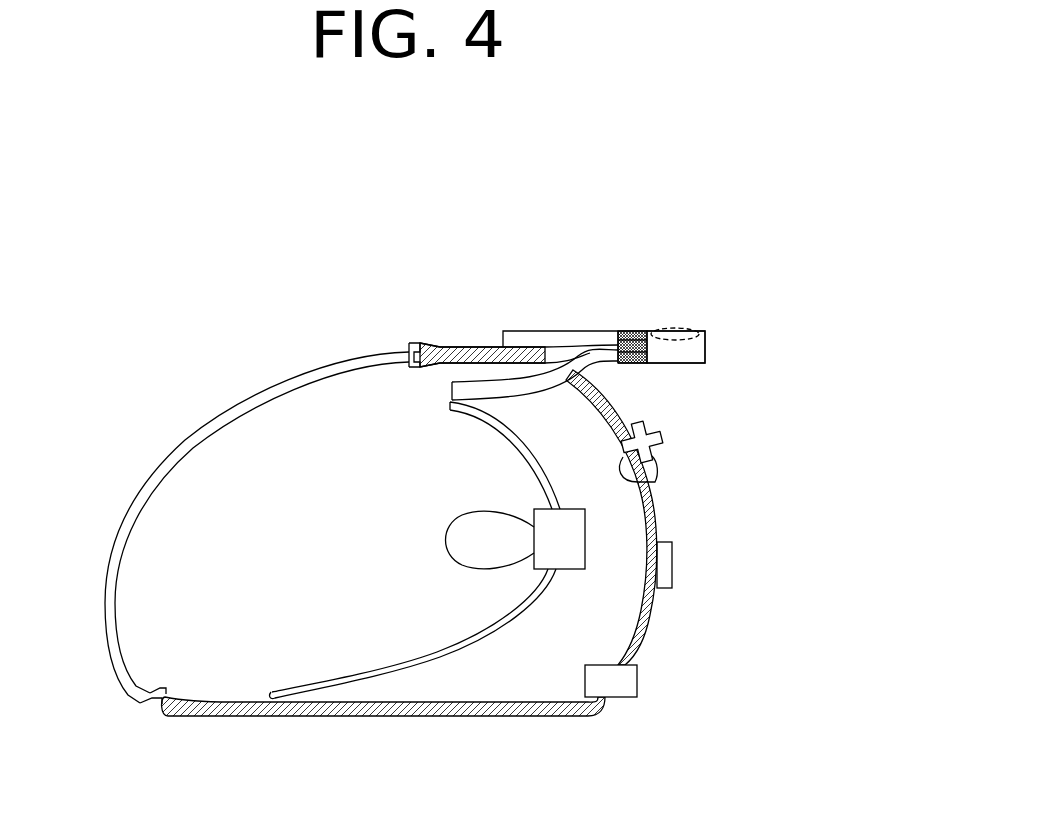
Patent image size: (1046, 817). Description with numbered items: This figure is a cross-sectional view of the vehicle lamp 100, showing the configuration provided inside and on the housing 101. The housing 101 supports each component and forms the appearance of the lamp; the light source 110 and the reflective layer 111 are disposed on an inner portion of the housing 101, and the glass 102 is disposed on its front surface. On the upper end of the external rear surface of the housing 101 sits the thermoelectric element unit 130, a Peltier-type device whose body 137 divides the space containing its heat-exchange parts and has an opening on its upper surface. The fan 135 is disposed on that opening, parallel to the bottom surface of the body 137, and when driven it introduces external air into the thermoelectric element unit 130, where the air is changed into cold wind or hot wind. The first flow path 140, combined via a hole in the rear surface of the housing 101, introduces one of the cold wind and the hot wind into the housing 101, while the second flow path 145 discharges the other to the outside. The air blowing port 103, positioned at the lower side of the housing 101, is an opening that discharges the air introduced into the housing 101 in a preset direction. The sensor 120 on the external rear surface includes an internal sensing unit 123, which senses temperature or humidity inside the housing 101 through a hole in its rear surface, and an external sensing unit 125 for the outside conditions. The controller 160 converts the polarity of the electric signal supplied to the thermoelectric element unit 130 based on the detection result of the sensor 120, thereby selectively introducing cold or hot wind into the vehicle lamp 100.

The vehicle lamp 100 is at (419, 221).
The housing 101 is at (652, 614).
The glass 102 is at (172, 455).
The air blowing port 103 is at (640, 683).
The light source 110 is at (455, 528).
The reflective layer 111 is at (468, 412).
The sensor 120 is at (708, 453).
The internal sensing unit 123 is at (655, 480).
The external sensing unit 125 is at (661, 440).
The thermoelectric element unit 130 is at (620, 330).
The fan 135 is at (667, 329).
The body 137 is at (705, 330).
The first flow path 140 is at (605, 364).
The second flow path 145 is at (556, 330).
The controller 160 is at (673, 560).